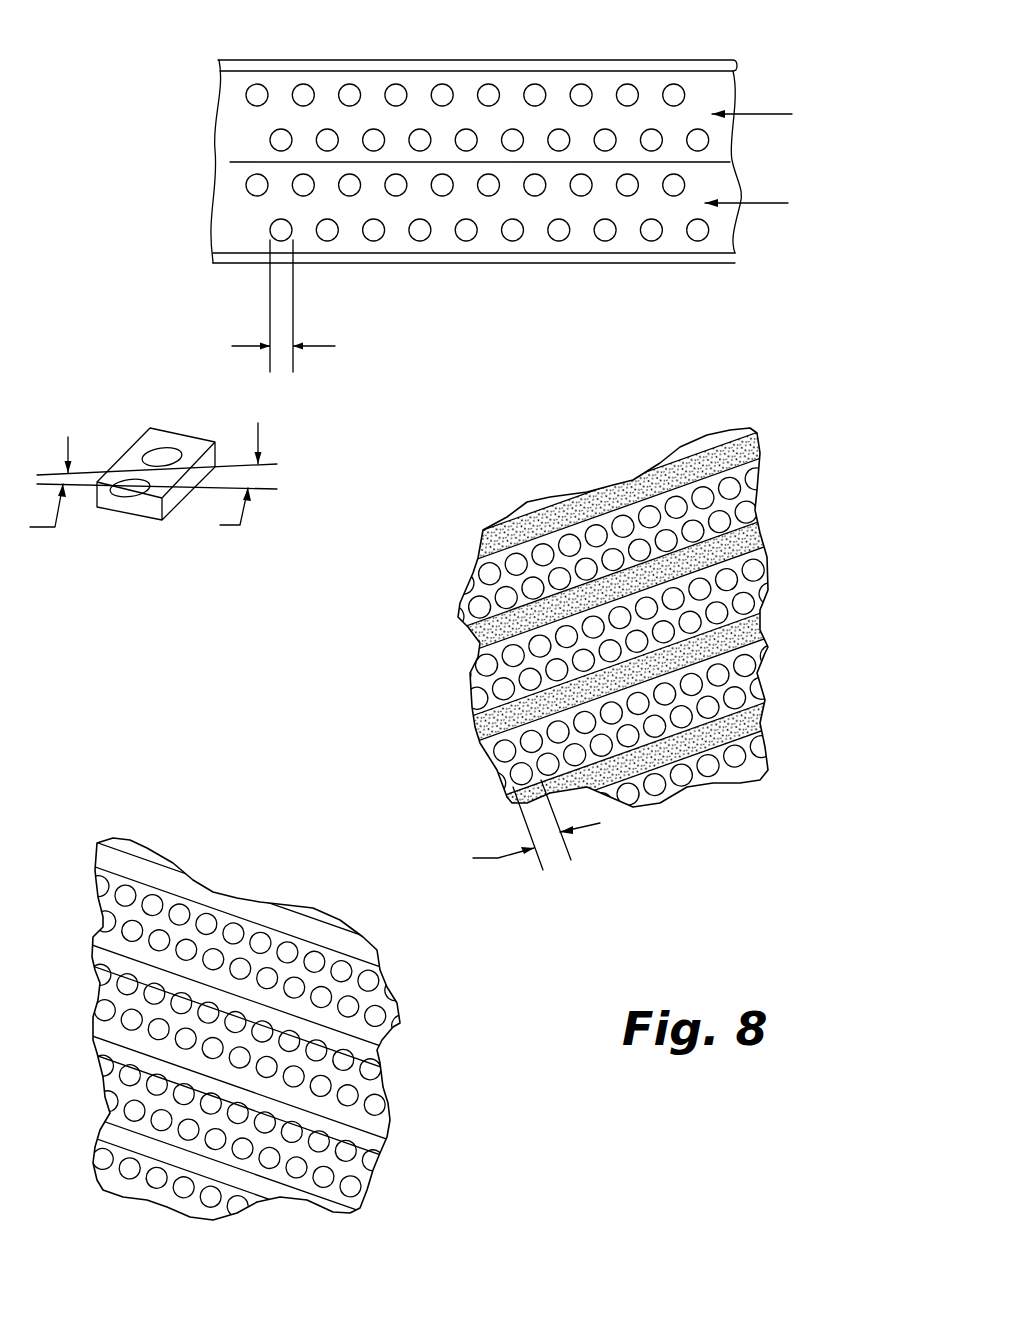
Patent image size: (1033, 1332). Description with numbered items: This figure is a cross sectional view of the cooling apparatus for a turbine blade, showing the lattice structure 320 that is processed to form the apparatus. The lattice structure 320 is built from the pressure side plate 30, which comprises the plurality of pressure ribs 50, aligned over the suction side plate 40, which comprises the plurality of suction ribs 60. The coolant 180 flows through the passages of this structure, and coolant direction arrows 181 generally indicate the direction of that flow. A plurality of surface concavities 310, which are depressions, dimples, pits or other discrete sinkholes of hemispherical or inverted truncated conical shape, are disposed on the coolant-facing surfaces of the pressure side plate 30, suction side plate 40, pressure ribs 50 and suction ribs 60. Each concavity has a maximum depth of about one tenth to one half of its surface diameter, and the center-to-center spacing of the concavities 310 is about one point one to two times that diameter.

The pressure side plate 30 is at (263, 63).
The suction side plate 40 is at (233, 256).
The pressure rib 50 is at (697, 85).
The suction rib 60 is at (769, 590).
The coolant 180 is at (717, 100).
The coolant direction arrows 181 is at (755, 203).
The surface concavities 310 is at (500, 85).
The lattice structure 320 is at (183, 70).